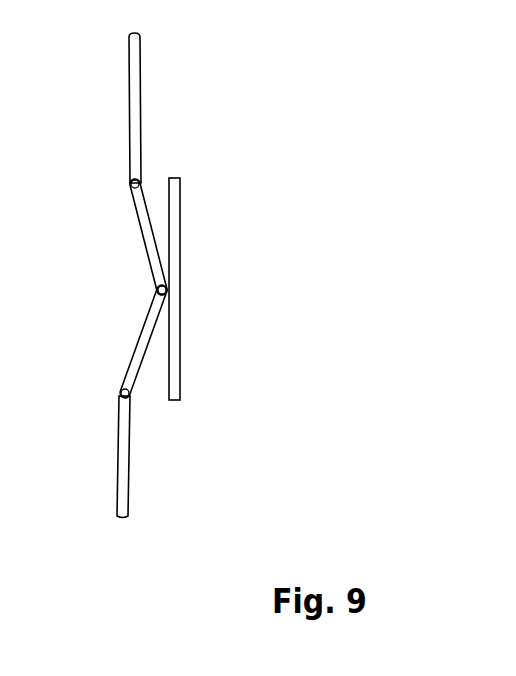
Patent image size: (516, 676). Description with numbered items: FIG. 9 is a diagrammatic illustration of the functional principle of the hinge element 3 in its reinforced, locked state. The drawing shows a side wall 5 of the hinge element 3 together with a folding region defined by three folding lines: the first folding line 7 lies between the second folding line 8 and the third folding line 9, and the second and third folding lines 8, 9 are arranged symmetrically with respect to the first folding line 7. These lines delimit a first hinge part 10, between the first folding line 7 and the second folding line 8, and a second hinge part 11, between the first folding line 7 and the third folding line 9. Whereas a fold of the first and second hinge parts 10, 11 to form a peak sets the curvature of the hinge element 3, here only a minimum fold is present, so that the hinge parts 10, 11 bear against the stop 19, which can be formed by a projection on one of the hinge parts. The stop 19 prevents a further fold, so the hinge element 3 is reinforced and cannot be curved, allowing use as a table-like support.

The hinge element 3 is at (280, 101).
The side wall 5 is at (135, 77).
The first folding line 7 is at (157, 290).
The second folding line 8 is at (130, 183).
The third folding line 9 is at (120, 392).
The first hinge part 10 is at (147, 233).
The second hinge part 11 is at (145, 340).
The stop 19 is at (175, 247).